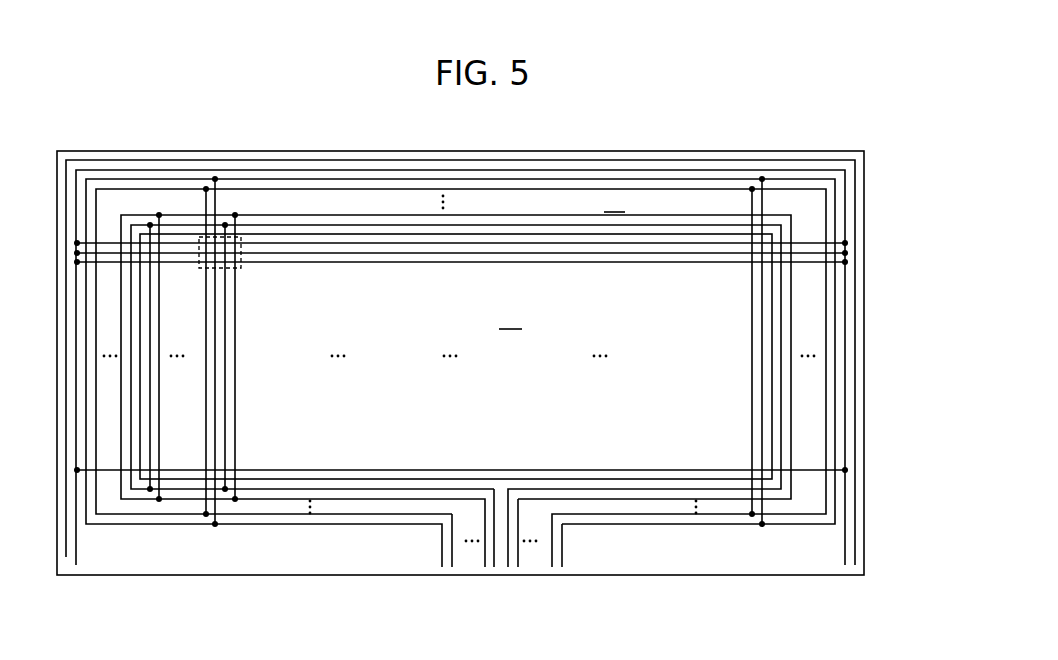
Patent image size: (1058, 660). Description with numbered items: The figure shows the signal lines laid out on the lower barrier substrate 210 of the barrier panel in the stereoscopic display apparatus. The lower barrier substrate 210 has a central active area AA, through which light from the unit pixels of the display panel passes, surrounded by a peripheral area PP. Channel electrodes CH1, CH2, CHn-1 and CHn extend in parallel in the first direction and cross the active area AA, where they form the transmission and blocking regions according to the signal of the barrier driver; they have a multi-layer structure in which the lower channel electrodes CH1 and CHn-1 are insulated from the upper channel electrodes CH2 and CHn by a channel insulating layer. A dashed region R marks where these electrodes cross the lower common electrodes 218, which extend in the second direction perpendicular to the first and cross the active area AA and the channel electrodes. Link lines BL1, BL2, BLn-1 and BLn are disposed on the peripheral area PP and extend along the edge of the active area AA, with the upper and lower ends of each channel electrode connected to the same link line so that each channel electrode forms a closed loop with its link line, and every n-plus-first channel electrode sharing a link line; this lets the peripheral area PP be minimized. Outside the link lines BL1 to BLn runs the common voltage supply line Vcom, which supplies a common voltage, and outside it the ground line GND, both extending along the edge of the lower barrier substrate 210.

The lower barrier substrate 210 is at (868, 230).
The lower common electrodes 218 is at (805, 470).
The ground line GND is at (67, 557).
The common voltage supply line Vcom is at (845, 553).
The region R is at (242, 236).
The peripheral area PP is at (614, 203).
The active area AA is at (510, 318).
The lower channel electrode CH1 is at (148, 237).
The upper channel electrode CH2 is at (158, 237).
The lower channel electrode CHn-1 is at (206, 192).
The upper channel electrode CHn is at (217, 204).
The link line BLn-1 is at (451, 557).
The link line BL1 is at (493, 557).
The link line BL2 is at (518, 557).
The link line BLn is at (562, 557).